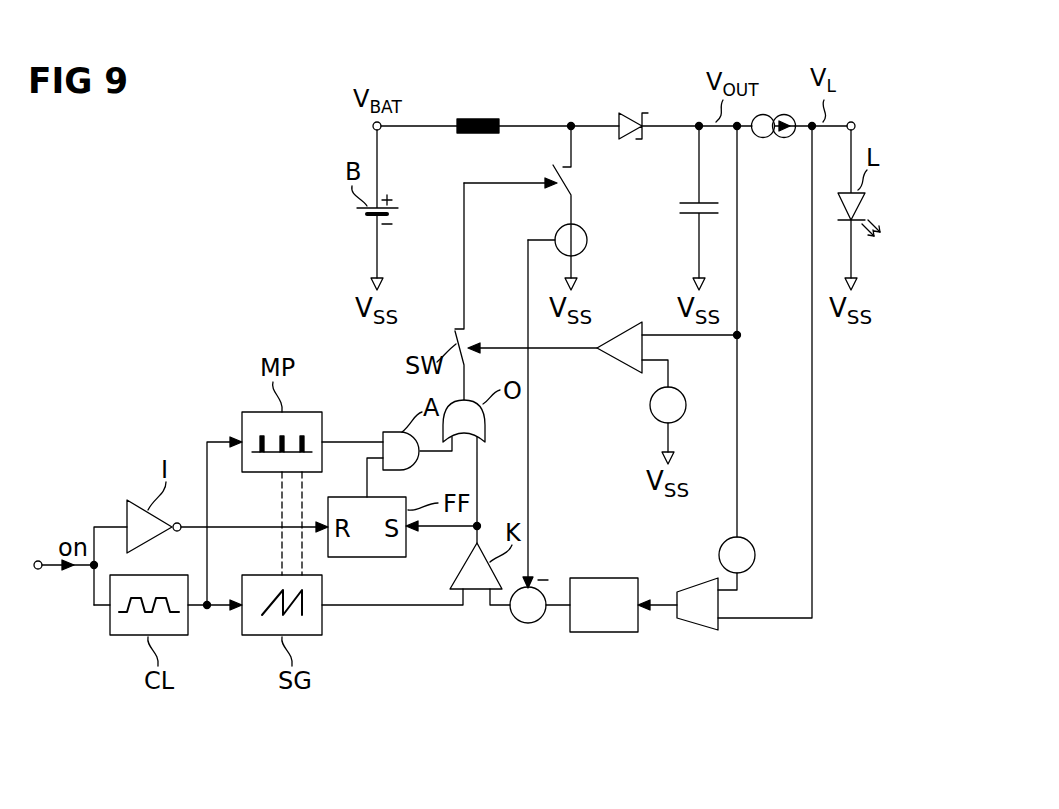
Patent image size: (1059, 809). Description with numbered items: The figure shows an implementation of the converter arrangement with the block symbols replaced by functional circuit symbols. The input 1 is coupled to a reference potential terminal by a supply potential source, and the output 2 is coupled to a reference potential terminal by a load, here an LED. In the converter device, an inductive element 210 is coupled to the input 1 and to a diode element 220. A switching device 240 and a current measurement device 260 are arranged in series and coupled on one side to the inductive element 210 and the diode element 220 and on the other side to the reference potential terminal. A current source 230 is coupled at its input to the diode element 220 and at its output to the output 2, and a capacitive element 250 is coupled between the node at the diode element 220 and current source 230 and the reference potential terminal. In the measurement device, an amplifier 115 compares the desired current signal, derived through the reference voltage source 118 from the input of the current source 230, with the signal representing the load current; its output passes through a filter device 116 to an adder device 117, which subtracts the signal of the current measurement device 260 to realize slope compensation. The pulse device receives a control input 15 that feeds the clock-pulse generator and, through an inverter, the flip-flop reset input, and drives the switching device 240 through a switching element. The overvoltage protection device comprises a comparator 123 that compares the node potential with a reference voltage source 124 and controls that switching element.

The input 1 is at (368, 126).
The output 2 is at (853, 118).
The control input 15 is at (38, 572).
The amplifier 115 is at (695, 630).
The filter device 116 is at (605, 578).
The adder device 117 is at (529, 623).
The reference voltage source 118 is at (719, 555).
The comparator 123 is at (617, 372).
The reference voltage source 124 is at (650, 416).
The inductive element 210 is at (480, 118).
The diode element 220 is at (633, 112).
The current source 230 is at (772, 140).
The switching device 240 is at (573, 186).
The capacitive element 250 is at (690, 212).
The current measurement device 260 is at (588, 238).